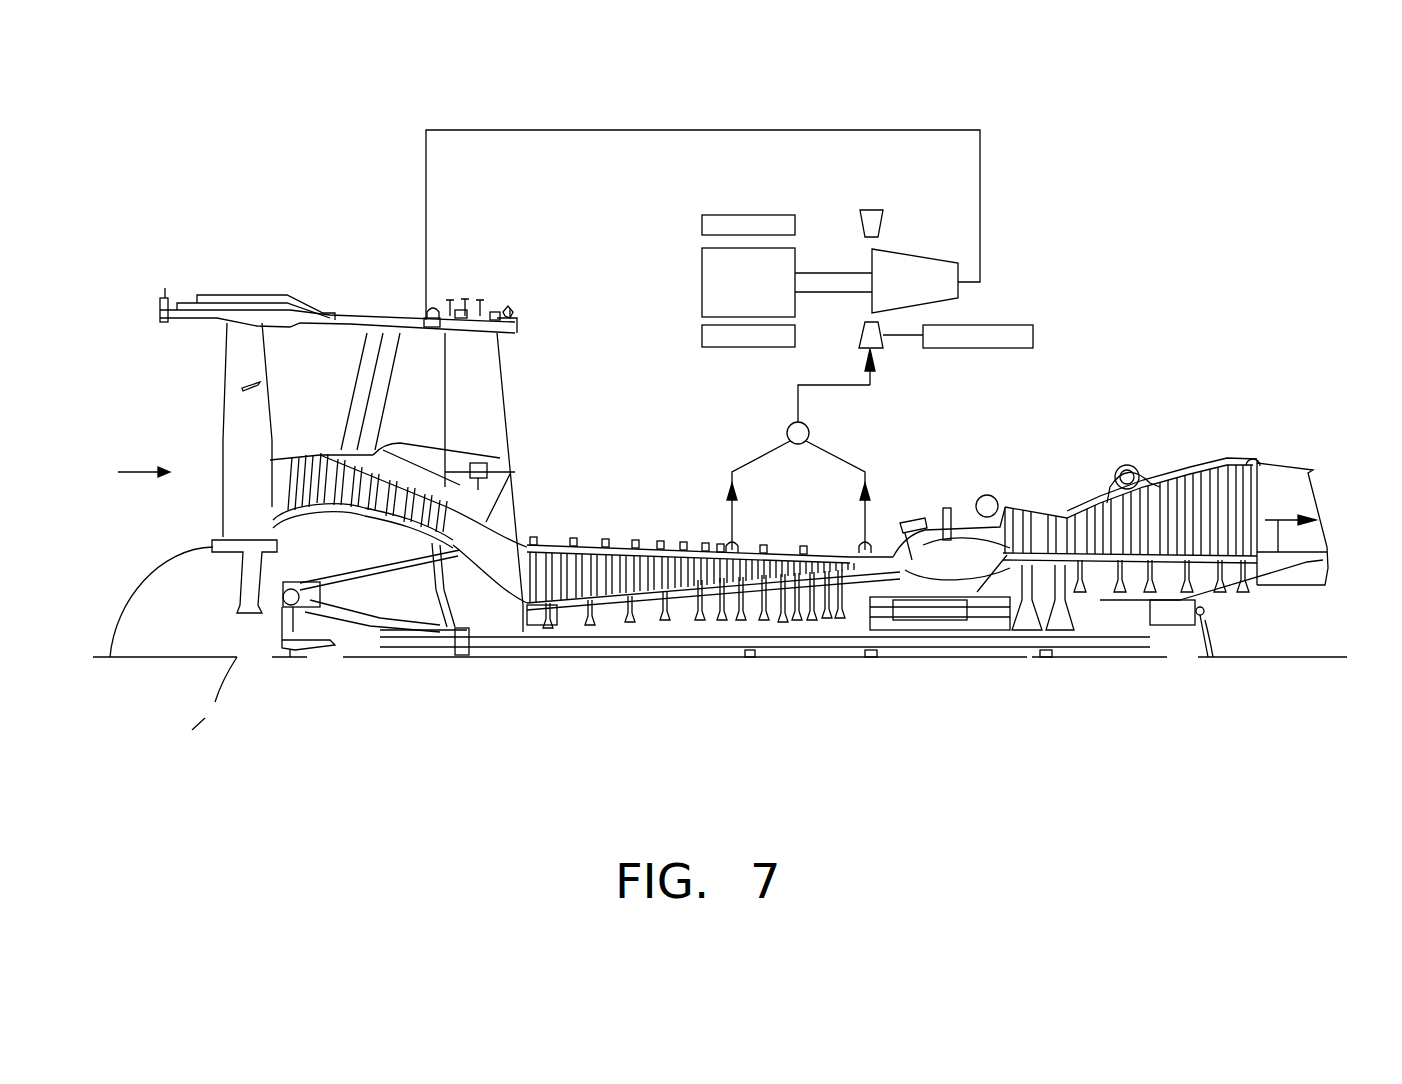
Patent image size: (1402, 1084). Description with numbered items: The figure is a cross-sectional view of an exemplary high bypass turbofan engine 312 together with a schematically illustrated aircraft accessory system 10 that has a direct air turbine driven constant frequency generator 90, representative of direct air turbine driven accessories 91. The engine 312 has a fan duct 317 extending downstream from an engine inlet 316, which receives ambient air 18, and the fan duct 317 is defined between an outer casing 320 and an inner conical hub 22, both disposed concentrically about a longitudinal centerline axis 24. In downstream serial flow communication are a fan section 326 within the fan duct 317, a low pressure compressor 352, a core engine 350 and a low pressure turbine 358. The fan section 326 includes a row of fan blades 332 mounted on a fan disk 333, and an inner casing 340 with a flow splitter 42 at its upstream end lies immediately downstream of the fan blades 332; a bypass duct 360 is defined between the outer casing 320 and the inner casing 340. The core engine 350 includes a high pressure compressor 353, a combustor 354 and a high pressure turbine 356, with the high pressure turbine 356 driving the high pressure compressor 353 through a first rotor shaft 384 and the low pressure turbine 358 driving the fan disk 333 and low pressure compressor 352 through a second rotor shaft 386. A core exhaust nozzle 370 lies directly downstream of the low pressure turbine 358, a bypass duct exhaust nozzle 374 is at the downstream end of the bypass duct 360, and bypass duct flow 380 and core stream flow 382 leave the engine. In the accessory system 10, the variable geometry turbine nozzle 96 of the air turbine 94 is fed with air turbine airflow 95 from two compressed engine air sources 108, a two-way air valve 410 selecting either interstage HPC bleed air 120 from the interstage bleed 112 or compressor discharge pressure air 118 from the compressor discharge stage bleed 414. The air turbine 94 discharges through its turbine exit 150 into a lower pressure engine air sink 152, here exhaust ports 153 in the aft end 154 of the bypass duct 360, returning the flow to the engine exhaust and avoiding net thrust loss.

The aircraft accessory system 10 is at (1045, 150).
The ambient air 18 is at (138, 468).
The inner conical hub 22 is at (170, 558).
The longitudinal centerline axis 24 is at (178, 741).
The flow splitter 42 is at (300, 468).
The direct air turbine driven constant frequency generator 90 is at (690, 195).
The direct air turbine driven accessories 91 is at (685, 348).
The air turbine 94 is at (945, 262).
The air turbine airflow 95 is at (872, 380).
The variable geometry turbine nozzle 96 is at (862, 212).
The compressed engine air sources 108 is at (865, 547).
The interstage bleed 112 is at (728, 548).
The compressor discharge pressure air 118 is at (873, 547).
The interstage HPC bleed air 120 is at (728, 492).
The turbine exit 150 is at (958, 298).
The lower pressure engine air sink 152 is at (440, 328).
The exhaust ports 153 is at (430, 320).
The aft end of the bypass duct 154 is at (427, 420).
The high bypass turbofan engine 312 is at (343, 783).
The engine inlet 316 is at (163, 313).
The fan duct 317 is at (188, 336).
The outer casing 320 is at (300, 300).
The fan section 326 is at (300, 412).
The fan blades 332 is at (240, 482).
The fan disk 333 is at (247, 563).
The inner casing 340 is at (292, 455).
The core engine 350 is at (632, 528).
The low pressure compressor 352 is at (354, 527).
The high pressure compressor 353 is at (641, 598).
The combustor 354 is at (1003, 630).
The high pressure turbine 356 is at (1083, 633).
The low pressure turbine 358 is at (1183, 495).
The bypass duct 360 is at (323, 338).
The core exhaust nozzle 370 is at (1280, 455).
The bypass duct exhaust nozzle 374 is at (525, 315).
The bypass duct flow 380 is at (425, 366).
The core stream flow 382 is at (1278, 552).
The first rotor shaft 384 is at (852, 603).
The second rotor shaft 386 is at (943, 640).
The two-way air valve 410 is at (786, 428).
The HPC compressor discharge stage bleed 414 is at (882, 540).